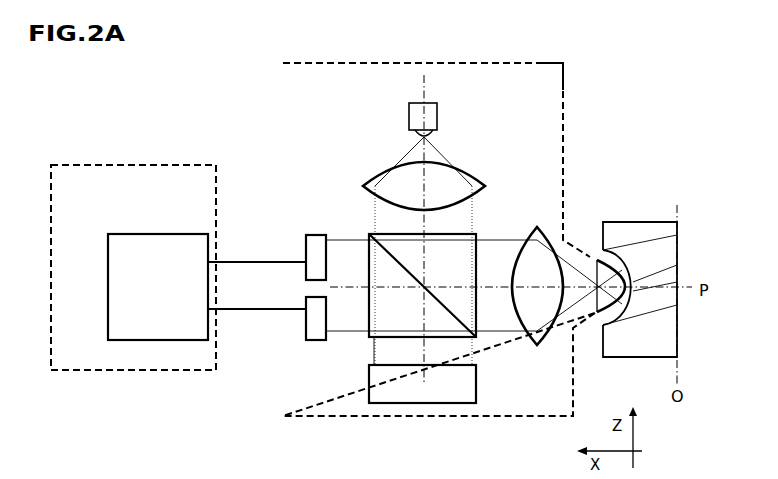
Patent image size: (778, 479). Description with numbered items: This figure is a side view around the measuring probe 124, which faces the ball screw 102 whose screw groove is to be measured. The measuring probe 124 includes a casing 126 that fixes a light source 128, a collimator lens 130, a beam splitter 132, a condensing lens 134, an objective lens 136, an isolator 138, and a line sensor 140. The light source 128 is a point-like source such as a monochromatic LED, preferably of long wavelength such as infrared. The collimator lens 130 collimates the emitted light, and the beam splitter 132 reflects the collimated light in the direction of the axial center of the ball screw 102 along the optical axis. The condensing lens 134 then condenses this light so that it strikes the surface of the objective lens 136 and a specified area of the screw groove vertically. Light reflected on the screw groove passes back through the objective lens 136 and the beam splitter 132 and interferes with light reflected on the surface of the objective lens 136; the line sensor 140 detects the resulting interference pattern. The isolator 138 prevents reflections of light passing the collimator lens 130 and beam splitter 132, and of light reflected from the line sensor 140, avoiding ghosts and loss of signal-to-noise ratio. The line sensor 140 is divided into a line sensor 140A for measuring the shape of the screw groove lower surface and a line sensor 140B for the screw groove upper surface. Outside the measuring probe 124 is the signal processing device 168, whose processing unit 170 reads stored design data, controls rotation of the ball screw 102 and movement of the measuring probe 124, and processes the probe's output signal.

The ball screw 102 is at (632, 232).
The measuring probe 124 is at (330, 51).
The casing 126 is at (548, 62).
The light source 128 is at (433, 112).
The collimator lens 130 is at (478, 181).
The beam splitter 132 is at (476, 234).
The condensing lens 134 is at (529, 232).
The objective lens 136 is at (592, 258).
The isolator 138 is at (475, 380).
The line sensor 140 is at (318, 280).
The line sensor 140A is at (316, 250).
The line sensor 140B is at (317, 336).
The signal processing device 168 is at (142, 163).
The processing unit 170 is at (152, 266).